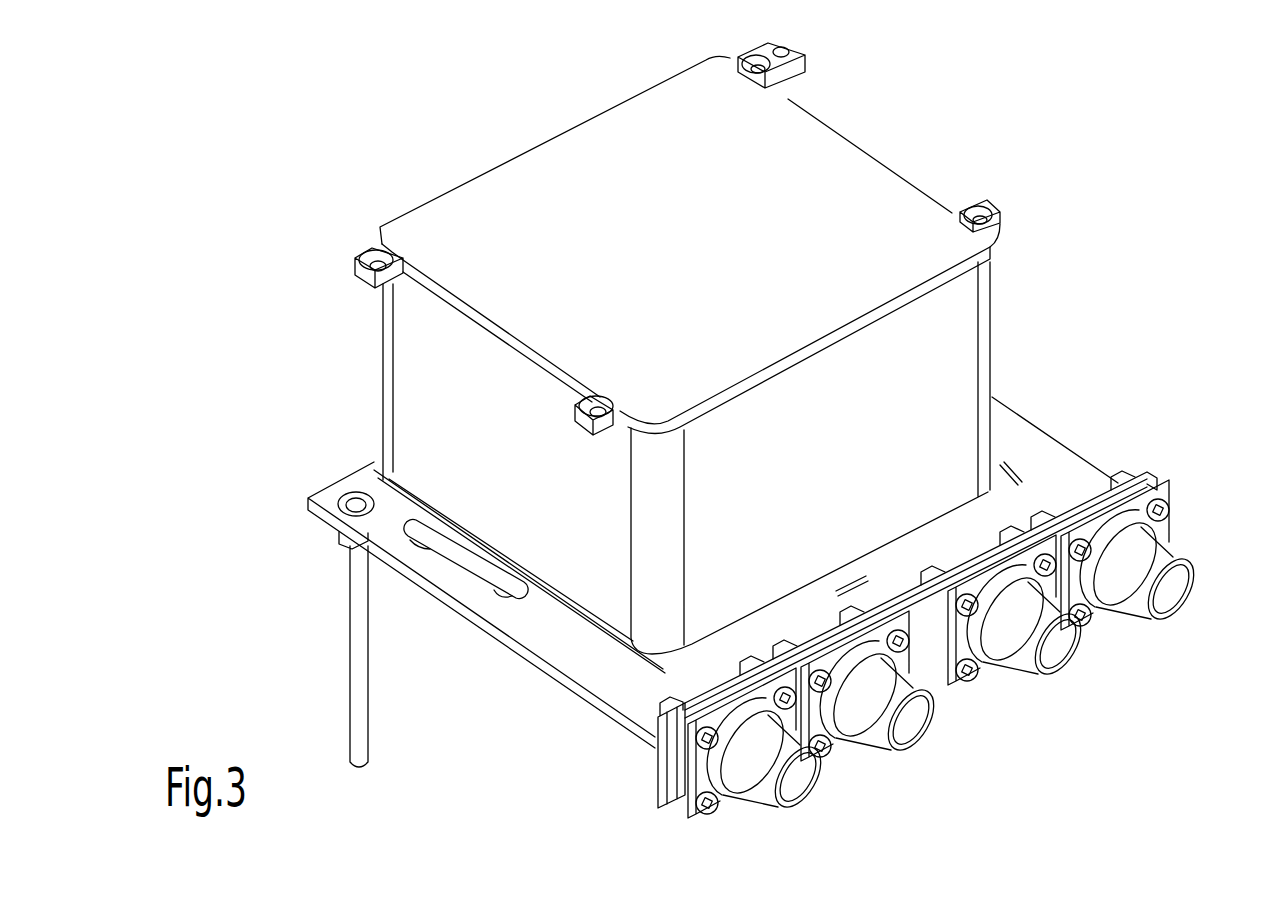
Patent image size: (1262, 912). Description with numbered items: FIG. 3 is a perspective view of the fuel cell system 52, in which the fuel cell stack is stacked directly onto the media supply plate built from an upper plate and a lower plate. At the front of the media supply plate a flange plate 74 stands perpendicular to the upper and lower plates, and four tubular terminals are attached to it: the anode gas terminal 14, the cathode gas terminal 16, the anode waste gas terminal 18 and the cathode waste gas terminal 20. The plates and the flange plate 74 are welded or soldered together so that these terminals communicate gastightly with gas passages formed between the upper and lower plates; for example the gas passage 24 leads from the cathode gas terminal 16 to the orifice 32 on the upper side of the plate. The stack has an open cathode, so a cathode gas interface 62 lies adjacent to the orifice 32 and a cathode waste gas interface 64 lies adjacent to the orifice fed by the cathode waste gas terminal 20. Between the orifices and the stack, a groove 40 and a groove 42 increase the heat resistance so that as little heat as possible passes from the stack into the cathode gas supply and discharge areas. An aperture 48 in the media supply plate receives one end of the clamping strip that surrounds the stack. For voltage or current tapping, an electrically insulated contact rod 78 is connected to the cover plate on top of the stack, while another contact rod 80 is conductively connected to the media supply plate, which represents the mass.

The anode gas terminal 14 is at (1068, 672).
The cathode gas terminal 16 is at (808, 800).
The anode waste gas terminal 18 is at (928, 744).
The cathode waste gas terminal 20 is at (1181, 606).
The gas passage 24 is at (505, 588).
The orifice 32 is at (480, 580).
The groove 40 is at (373, 470).
The groove 42 is at (1015, 477).
The aperture 48 is at (872, 582).
The fuel cell system 52 is at (1061, 164).
The cathode gas interface 62 is at (508, 463).
The cathode waste gas interface 64 is at (993, 314).
The flange plate 74 is at (666, 772).
The contact rod 78 is at (803, 95).
The contact rod 80 is at (362, 727).